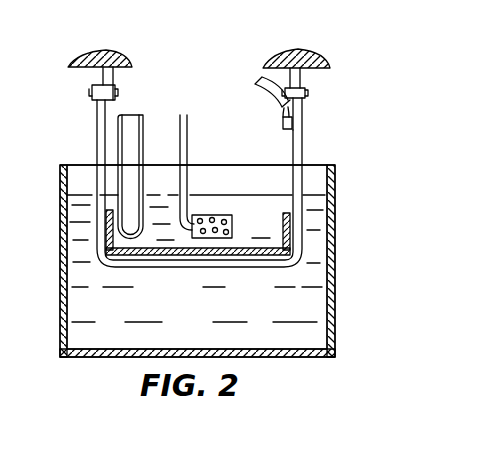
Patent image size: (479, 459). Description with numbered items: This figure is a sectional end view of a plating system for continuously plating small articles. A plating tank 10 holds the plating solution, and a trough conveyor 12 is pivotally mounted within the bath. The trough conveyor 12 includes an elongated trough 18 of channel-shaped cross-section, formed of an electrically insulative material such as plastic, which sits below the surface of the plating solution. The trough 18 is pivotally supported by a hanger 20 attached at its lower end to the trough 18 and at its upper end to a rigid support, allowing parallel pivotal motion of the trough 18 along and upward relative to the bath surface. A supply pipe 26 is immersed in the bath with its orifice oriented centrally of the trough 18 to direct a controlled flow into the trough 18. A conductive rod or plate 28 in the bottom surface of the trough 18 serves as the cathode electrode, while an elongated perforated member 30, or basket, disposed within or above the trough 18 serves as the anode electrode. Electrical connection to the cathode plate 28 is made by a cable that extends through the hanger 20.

The plating tank 10 is at (335, 252).
The trough conveyor 12 is at (197, 268).
The trough 18 is at (284, 225).
The hanger 20 is at (302, 138).
The supply pipe 26 is at (143, 117).
The conductive rod or plate 28 is at (272, 255).
The elongated perforated member 30 is at (240, 184).